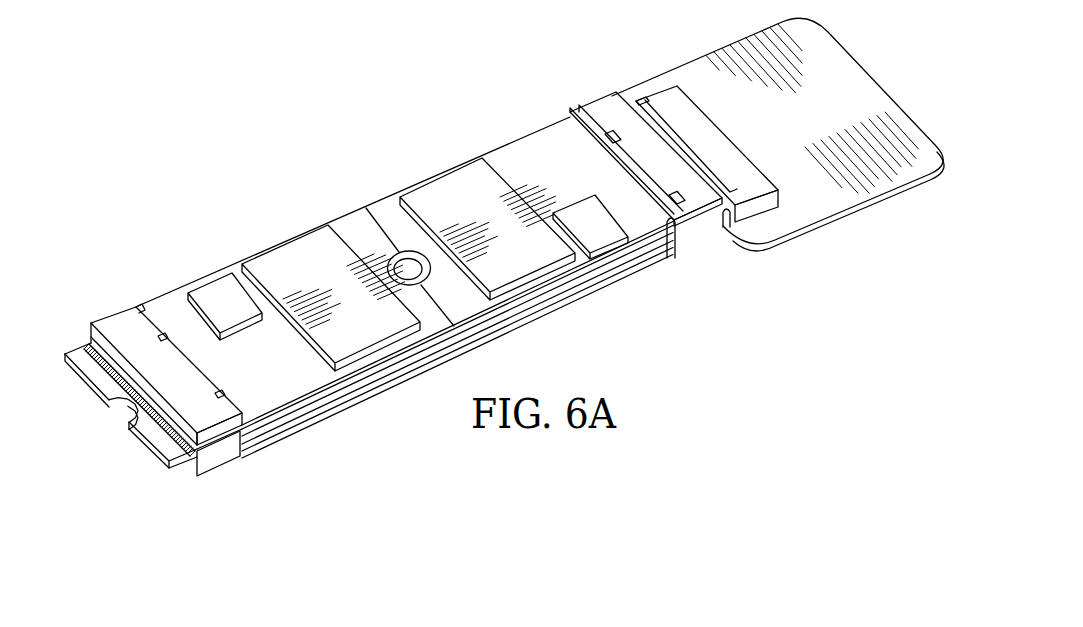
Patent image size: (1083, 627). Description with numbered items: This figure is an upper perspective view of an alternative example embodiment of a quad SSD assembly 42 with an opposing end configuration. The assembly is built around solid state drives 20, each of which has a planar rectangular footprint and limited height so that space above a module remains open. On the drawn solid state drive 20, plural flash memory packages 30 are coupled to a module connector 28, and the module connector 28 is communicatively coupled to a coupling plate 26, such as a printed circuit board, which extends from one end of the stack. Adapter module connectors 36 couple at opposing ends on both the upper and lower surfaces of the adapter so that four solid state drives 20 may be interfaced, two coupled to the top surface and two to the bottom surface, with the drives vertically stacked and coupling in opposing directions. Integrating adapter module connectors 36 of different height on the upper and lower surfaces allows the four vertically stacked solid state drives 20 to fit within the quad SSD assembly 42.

The solid state drive 20 is at (346, 217).
The coupling plate 26 is at (875, 90).
The module connector 28 is at (658, 92).
The flash memory packages 30 is at (285, 253).
The adapter module connectors 36 is at (122, 320).
The quad SSD assembly 42 is at (424, 80).